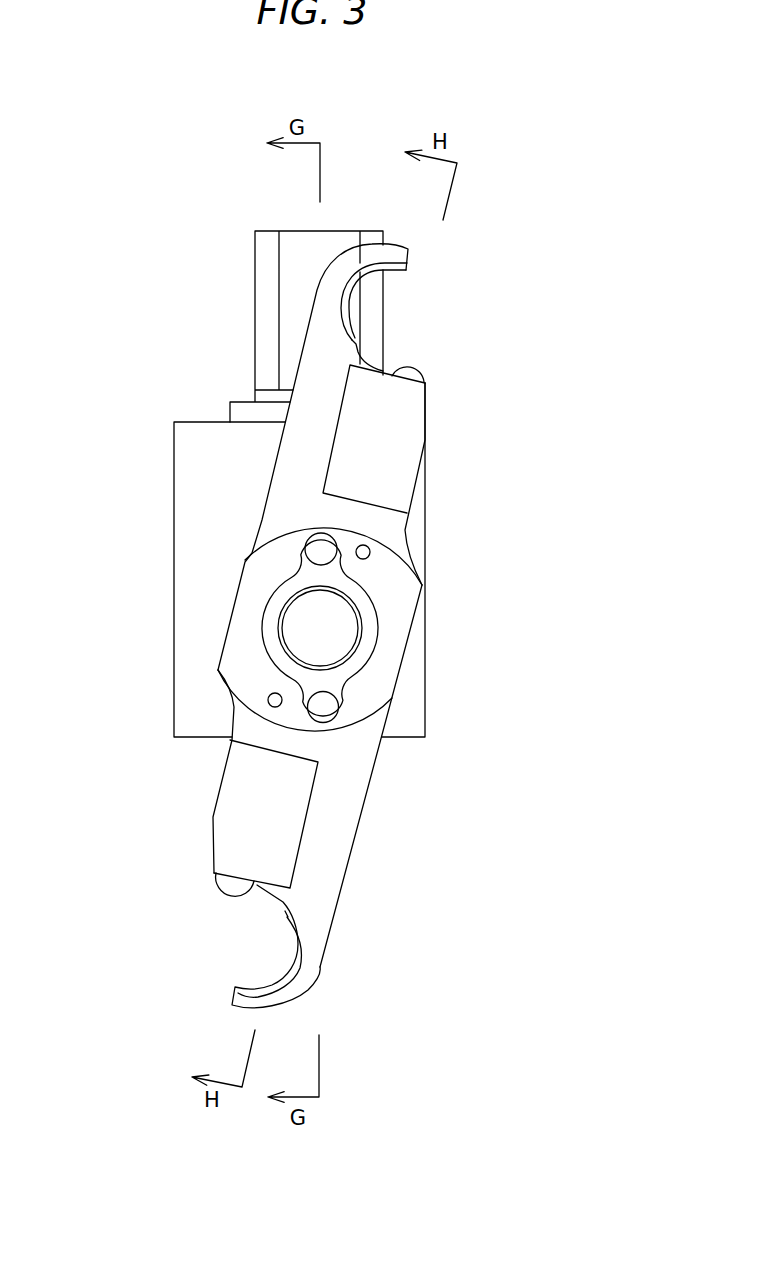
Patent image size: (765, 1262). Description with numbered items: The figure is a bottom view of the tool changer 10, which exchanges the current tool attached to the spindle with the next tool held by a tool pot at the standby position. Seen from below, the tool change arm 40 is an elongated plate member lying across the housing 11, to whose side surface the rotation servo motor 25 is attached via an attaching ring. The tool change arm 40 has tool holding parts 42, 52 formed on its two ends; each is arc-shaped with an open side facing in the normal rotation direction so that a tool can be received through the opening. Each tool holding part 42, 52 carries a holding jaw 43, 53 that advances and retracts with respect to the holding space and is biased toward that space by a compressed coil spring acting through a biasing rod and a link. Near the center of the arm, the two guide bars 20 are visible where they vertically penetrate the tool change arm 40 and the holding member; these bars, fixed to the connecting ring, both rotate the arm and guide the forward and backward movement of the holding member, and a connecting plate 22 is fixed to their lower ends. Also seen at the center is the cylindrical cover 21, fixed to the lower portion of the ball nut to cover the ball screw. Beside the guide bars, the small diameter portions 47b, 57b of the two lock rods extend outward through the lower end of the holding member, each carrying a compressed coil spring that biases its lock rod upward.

The tool changer 10 is at (115, 281).
The housing 11 is at (175, 487).
The guide bars 20 is at (328, 545).
The cylindrical cover 21 is at (348, 638).
The connecting plate 22 is at (372, 614).
The rotation servo motor 25 is at (268, 233).
The tool change arm 40 is at (368, 557).
The tool holding part 42 is at (438, 308).
The holding jaw 43 is at (408, 363).
The small diameter portion 47b is at (370, 552).
The tool holding part 52 is at (203, 952).
The holding jaw 53 is at (227, 887).
The small diameter portion 57b is at (266, 700).